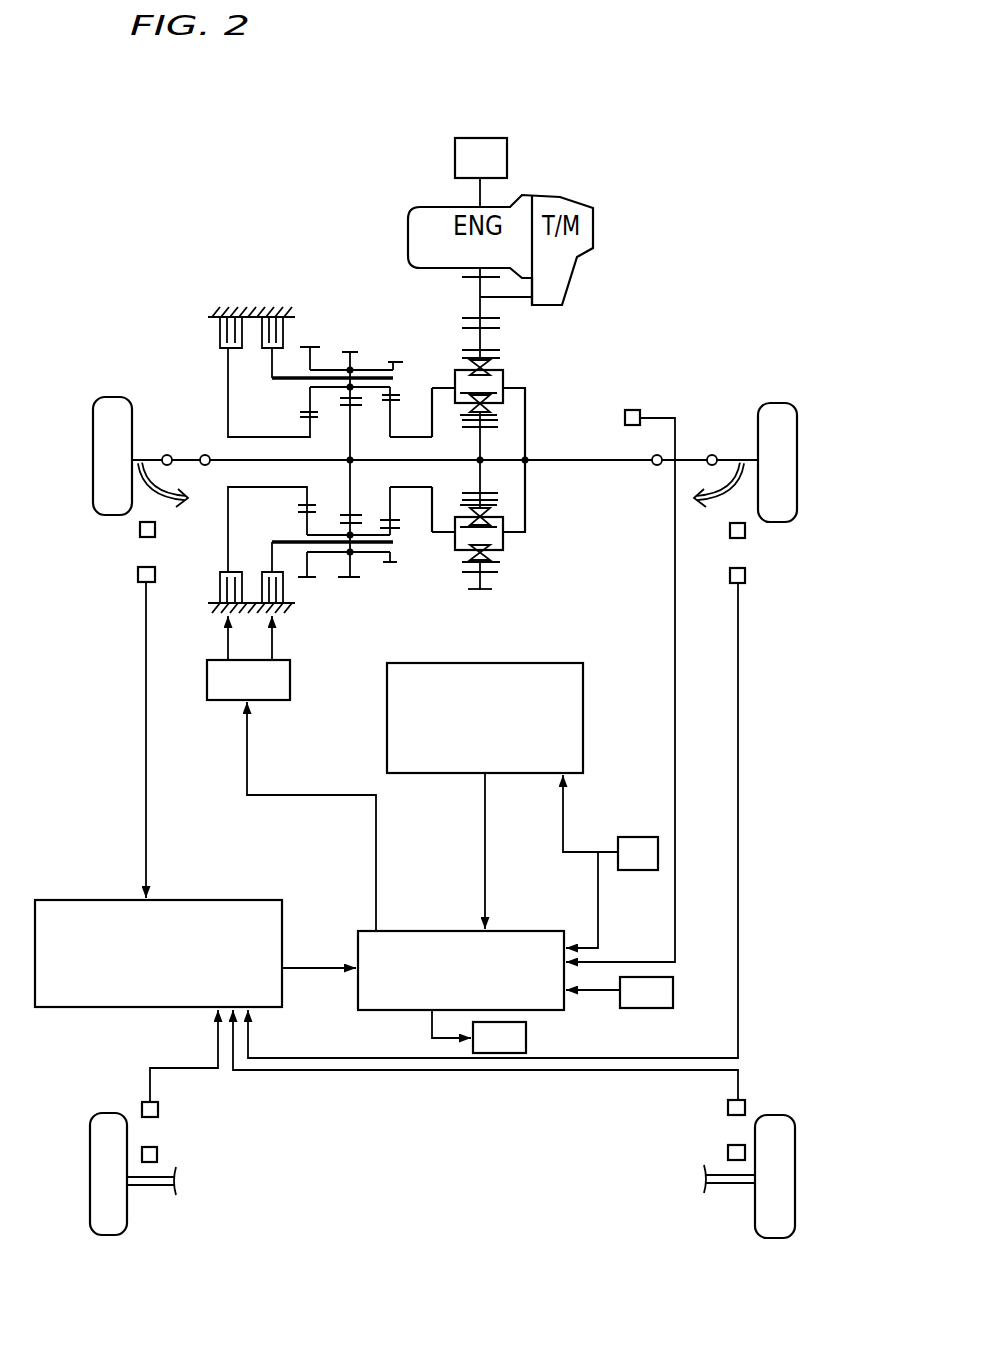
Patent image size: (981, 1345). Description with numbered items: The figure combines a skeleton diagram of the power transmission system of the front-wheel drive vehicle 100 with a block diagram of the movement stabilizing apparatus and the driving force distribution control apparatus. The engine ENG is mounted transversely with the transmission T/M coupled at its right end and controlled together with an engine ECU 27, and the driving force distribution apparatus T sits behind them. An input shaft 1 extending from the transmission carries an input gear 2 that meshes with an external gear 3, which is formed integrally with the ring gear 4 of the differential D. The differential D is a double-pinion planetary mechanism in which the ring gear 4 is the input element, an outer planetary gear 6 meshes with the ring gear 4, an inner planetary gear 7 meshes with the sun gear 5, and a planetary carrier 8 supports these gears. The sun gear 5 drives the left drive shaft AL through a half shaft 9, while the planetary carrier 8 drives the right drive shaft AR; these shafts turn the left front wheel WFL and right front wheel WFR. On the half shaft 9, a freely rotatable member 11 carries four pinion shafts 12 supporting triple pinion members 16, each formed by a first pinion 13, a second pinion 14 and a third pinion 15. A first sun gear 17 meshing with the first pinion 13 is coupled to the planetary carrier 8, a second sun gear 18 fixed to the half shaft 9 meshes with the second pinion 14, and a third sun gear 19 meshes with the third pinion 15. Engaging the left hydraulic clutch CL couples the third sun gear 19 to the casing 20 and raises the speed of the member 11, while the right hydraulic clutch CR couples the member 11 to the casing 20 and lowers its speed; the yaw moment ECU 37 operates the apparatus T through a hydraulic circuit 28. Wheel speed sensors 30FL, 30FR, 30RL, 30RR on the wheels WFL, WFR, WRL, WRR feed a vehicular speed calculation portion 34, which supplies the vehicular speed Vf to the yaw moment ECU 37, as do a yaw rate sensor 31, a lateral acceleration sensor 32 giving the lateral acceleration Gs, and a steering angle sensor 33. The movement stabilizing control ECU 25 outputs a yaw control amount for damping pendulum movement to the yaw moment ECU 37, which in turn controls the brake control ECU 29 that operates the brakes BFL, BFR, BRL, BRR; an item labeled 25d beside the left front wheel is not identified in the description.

The vehicle 100 is at (692, 213).
The engine ECU 27 is at (491, 137).
The driving force distribution apparatus T is at (306, 276).
The input gear 2 is at (470, 279).
The input shaft 1 is at (488, 299).
The external gear 3 is at (500, 324).
The ring gear 4 is at (500, 352).
The differential D is at (493, 452).
The outer planetary gear 6 is at (465, 355).
The inner planetary gear 7 is at (465, 422).
The sun gear 5 is at (495, 428).
The planetary carrier 8 is at (428, 515).
The left drive shaft AL is at (185, 458).
The right drive shaft AR is at (565, 458).
The casing 20 is at (267, 310).
The left hydraulic clutch CL is at (221, 349).
The right hydraulic clutch CR is at (265, 351).
The third sun gear 19 is at (318, 420).
The pinion shafts 12 is at (393, 378).
The triple pinion members 16 is at (333, 362).
The third pinion 15 is at (310, 348).
The first pinion 13 is at (396, 362).
The second pinion 14 is at (365, 345).
The second sun gear 18 is at (355, 408).
The first sun gear 17 is at (398, 402).
The half shaft 9 is at (305, 466).
The member 11 is at (274, 540).
The left front wheel WFL is at (115, 397).
The right front wheel WFR is at (780, 403).
The left rear wheel WRL is at (108, 1113).
The right rear wheel WRR is at (772, 1115).
The brake 25d is at (150, 495).
The steering angle sensor 33 is at (638, 408).
The left front brake BFL is at (155, 530).
The right front brake BFR is at (745, 531).
The left front wheel speed sensor 30FL is at (155, 575).
The right front wheel speed sensor 30FR is at (745, 575).
The left rear wheel speed sensor 30RL is at (158, 1108).
The right rear wheel speed sensor 30RR is at (728, 1105).
The left rear brake BRL is at (158, 1152).
The right rear brake BRR is at (728, 1150).
The hydraulic circuit 28 is at (290, 680).
The movement stabilizing control ECU 25 is at (548, 663).
The yaw rate sensor 31 is at (640, 837).
The vehicular speed calculation portion 34 is at (195, 898).
The vehicular speed Vf is at (319, 955).
The yaw moment ECU 37 is at (528, 931).
The lateral acceleration sensor 32 is at (673, 990).
The lateral acceleration Gs is at (600, 1008).
The brake control ECU 29 is at (500, 1053).